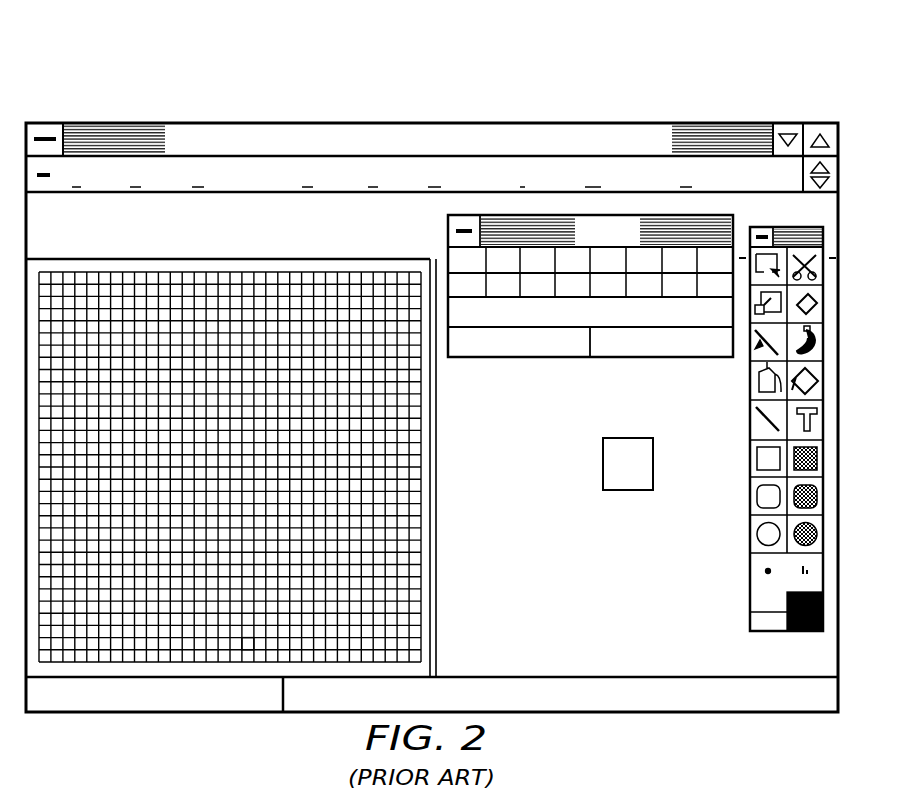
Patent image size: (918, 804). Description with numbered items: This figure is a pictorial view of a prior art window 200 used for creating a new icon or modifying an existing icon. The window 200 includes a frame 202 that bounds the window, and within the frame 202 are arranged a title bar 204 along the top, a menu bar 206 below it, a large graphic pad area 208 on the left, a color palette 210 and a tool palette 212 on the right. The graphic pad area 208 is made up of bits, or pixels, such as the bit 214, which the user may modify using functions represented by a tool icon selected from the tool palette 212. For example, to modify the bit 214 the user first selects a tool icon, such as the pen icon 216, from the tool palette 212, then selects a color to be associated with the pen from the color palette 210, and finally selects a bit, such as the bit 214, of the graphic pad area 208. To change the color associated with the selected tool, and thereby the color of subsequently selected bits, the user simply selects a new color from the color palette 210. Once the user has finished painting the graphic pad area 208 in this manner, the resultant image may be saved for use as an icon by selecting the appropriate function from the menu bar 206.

The window 200 is at (604, 58).
The frame 202 is at (816, 124).
The title bar 204 is at (735, 130).
The menu bar 206 is at (664, 162).
The graphic pad area 208 is at (260, 355).
The color palette 210 is at (452, 283).
The tool palette 212 is at (740, 436).
The bit 214 is at (248, 646).
The pen icon 216 is at (750, 360).